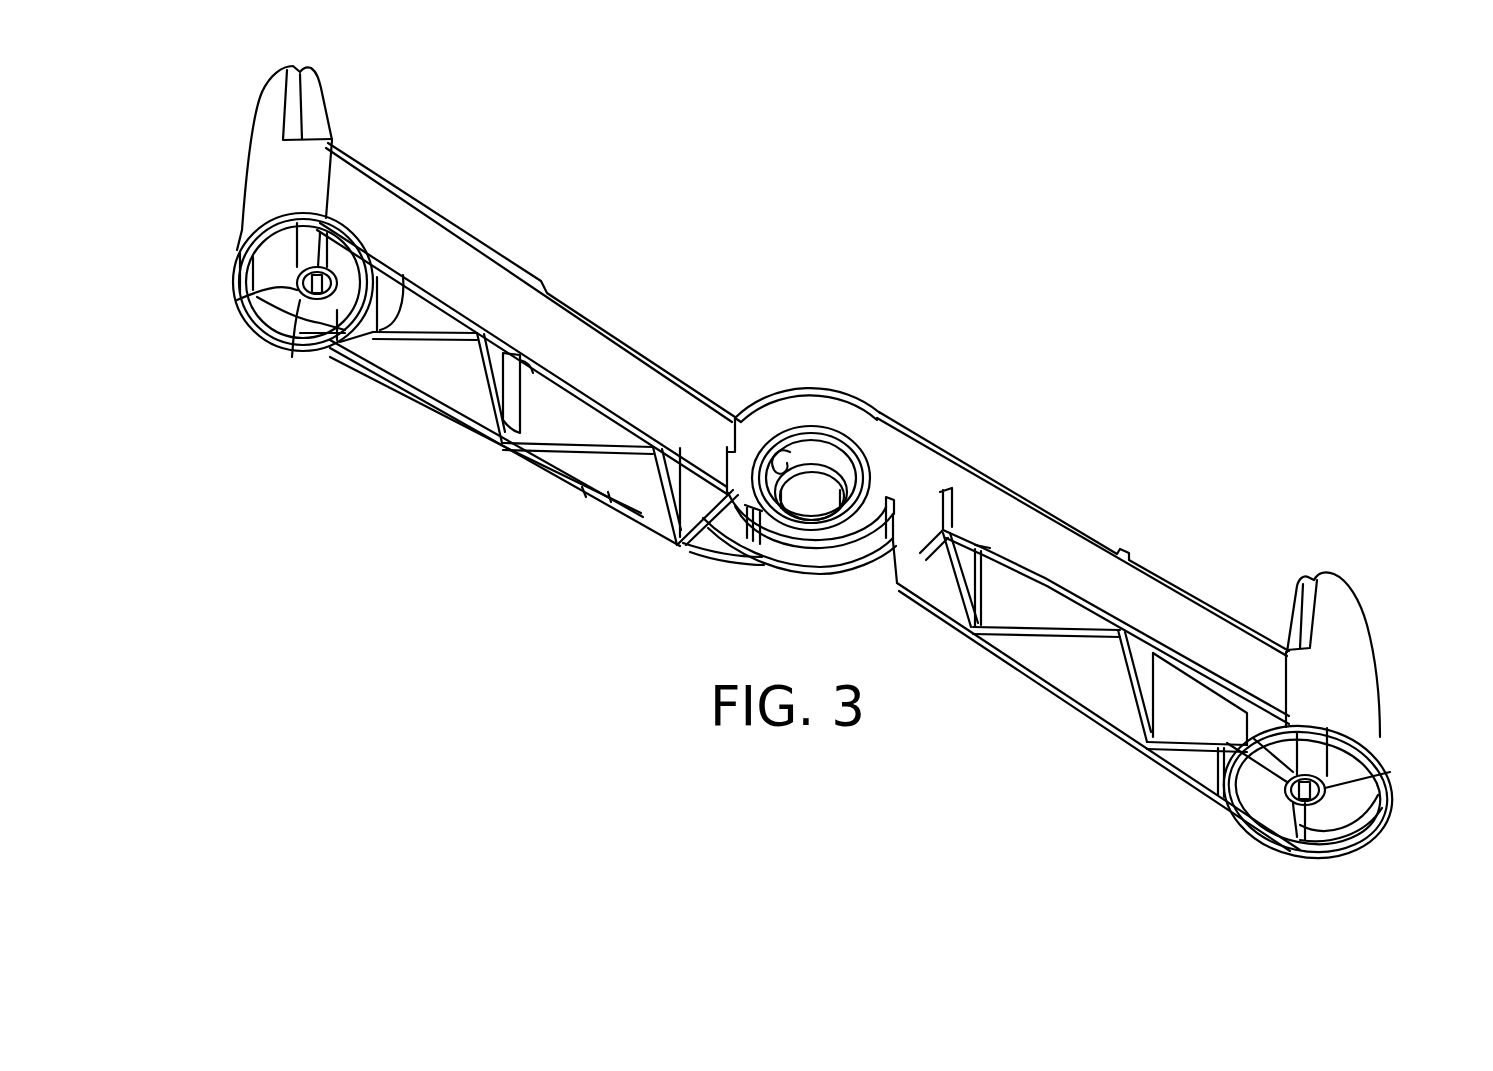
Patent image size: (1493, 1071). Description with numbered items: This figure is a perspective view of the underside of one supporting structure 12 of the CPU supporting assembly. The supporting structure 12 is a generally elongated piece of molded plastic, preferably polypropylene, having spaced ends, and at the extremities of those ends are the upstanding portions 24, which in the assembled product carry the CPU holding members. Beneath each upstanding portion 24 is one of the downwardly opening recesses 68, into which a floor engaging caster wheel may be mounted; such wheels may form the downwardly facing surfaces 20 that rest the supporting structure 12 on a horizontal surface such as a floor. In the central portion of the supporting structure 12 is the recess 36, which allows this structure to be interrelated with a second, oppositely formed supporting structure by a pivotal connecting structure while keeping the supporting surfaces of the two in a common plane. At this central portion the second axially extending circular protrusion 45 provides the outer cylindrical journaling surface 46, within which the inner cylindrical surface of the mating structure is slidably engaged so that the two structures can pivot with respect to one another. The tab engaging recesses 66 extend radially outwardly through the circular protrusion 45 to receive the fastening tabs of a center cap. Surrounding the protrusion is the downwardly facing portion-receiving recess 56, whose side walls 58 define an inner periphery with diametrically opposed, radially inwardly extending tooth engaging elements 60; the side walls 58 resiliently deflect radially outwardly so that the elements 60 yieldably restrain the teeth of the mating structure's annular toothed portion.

The supporting structure 12 is at (492, 278).
The downwardly facing surfaces 20 is at (237, 250).
The upstanding portions 24 is at (256, 118).
The recesses 36 is at (816, 487).
The second axially extending circular protrusion 45 is at (784, 524).
The outer cylindrical journaling surface 46 is at (818, 508).
The portion-receiving recess 56 is at (832, 549).
The side walls 58 is at (767, 430).
The tooth engaging elements 60 is at (880, 437).
The tab engaging recesses 66 is at (781, 452).
The downwardly opening recesses 68 is at (308, 294).